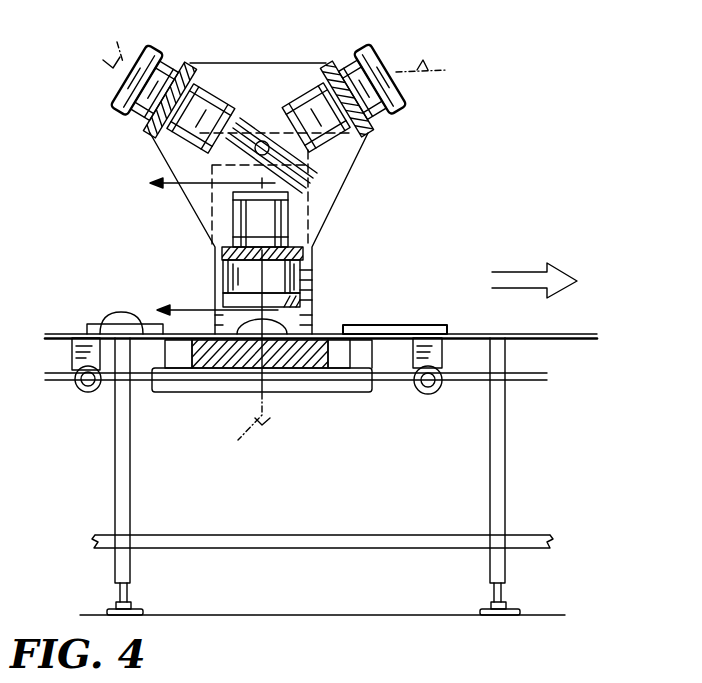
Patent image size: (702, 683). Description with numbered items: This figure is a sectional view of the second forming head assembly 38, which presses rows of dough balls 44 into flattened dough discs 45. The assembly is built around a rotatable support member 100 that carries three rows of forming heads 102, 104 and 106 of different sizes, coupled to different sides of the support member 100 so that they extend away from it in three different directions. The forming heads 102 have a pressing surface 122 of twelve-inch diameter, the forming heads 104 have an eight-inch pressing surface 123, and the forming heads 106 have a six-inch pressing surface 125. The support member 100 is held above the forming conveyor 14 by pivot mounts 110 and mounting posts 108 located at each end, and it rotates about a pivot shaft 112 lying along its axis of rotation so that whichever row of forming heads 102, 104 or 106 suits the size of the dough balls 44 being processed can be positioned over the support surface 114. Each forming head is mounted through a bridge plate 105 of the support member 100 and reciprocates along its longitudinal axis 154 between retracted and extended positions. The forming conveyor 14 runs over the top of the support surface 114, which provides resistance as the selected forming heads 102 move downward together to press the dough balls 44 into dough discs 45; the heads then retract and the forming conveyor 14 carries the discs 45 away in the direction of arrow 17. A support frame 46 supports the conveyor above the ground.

The forming conveyor 14 is at (58, 332).
The arrow 17 is at (512, 273).
The second forming head assembly 38 is at (440, 128).
The dough balls 44 is at (278, 326).
The flattened dough discs 45 is at (410, 330).
The support frame 46 is at (497, 460).
The rotatable support member 100 is at (300, 63).
The forming heads 102 is at (273, 278).
The forming heads 104 is at (133, 122).
The bridge plate 105 is at (190, 66).
The forming heads 106 is at (380, 114).
The mounting posts 108 is at (222, 258).
The pivot mounts 110 is at (350, 160).
The pivot shaft 112 is at (263, 141).
The support surface 114 is at (220, 353).
The pressing surface 122 is at (322, 299).
The pressing surface 123 is at (126, 90).
The pressing surface 125 is at (385, 58).
The longitudinal axis 154 is at (294, 244).